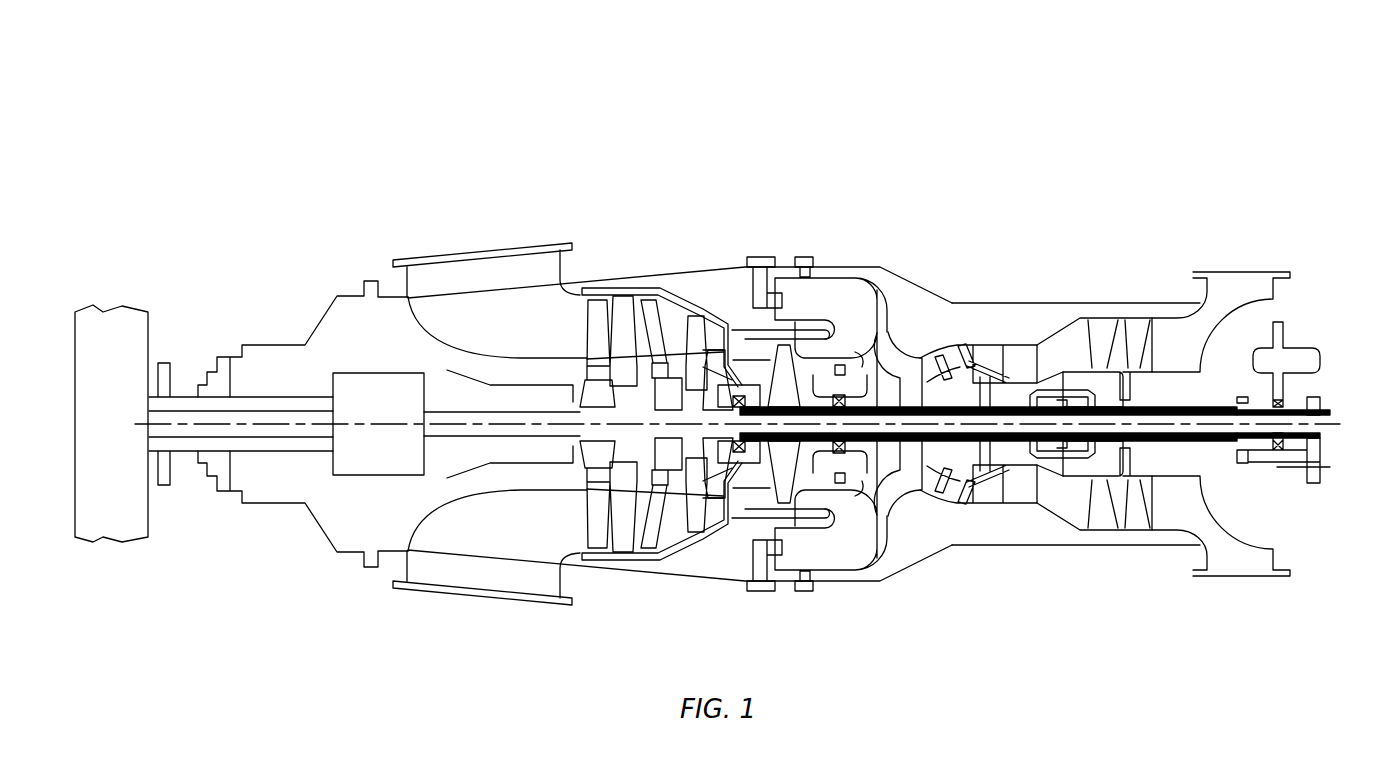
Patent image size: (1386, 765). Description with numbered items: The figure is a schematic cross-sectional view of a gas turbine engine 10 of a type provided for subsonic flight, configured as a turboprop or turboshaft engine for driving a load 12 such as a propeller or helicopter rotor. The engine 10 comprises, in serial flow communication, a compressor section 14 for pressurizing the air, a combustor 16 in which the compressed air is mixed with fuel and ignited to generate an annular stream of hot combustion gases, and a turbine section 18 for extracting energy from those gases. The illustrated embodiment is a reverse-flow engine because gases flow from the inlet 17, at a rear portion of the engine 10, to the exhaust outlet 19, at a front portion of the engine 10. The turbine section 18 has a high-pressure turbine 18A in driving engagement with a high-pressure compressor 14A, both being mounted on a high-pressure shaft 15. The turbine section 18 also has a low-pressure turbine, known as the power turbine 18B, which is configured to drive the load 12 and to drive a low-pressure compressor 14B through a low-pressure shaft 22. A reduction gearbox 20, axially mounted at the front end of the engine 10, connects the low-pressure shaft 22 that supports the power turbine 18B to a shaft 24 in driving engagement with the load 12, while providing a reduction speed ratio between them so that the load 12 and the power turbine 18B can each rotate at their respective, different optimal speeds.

The gas turbine engine 10 is at (1202, 123).
The load 12 is at (118, 527).
The compressor section 14 is at (1030, 323).
The high-pressure compressor 14A is at (990, 495).
The low-pressure compressor 14B is at (1135, 517).
The high-pressure shaft 15 is at (898, 380).
The combustor 16 is at (832, 292).
The inlet 17 is at (1265, 258).
The turbine section 18 is at (686, 294).
The high-pressure turbine 18A is at (780, 473).
The power turbine 18B is at (690, 537).
The exhaust outlet 19 is at (483, 237).
The reduction gearbox 20 is at (363, 475).
The low-pressure shaft 22 is at (494, 410).
The shaft 24 is at (268, 453).